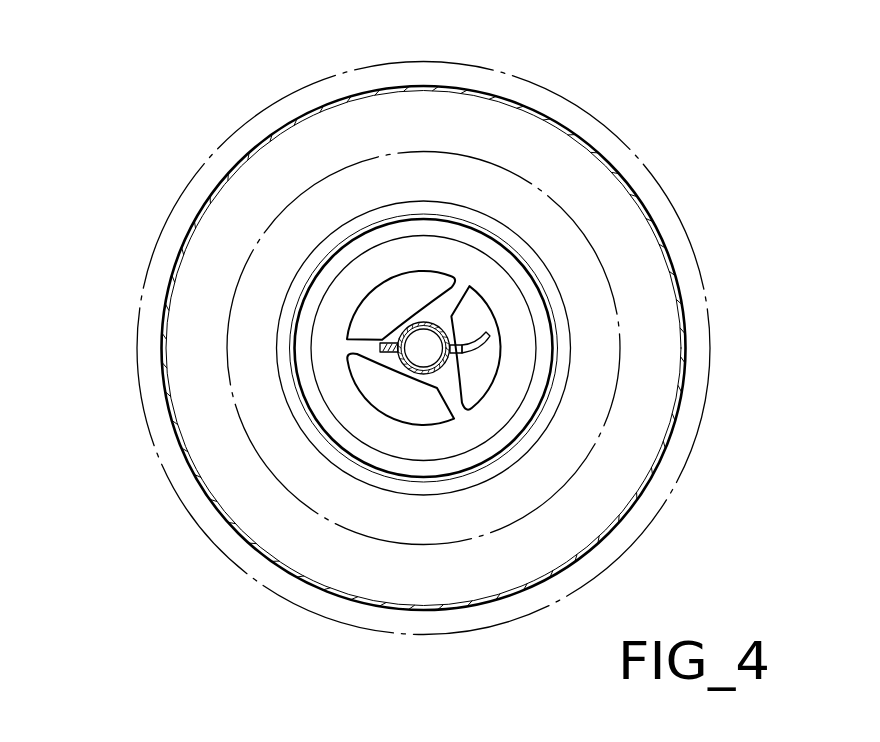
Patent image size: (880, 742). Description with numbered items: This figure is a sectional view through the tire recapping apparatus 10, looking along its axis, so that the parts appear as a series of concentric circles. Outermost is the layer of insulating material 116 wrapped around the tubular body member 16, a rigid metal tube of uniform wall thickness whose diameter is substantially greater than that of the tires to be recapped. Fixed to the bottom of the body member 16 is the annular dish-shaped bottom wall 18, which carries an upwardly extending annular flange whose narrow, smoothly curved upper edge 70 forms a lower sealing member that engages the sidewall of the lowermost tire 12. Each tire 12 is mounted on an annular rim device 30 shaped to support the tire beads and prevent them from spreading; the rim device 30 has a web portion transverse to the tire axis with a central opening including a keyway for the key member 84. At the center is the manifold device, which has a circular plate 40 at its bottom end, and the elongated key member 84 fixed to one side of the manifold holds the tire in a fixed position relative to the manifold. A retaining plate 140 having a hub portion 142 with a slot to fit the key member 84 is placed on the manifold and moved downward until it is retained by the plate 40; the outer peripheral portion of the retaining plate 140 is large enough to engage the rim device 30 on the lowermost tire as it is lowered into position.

The apparatus 10 is at (697, 167).
The tire 12 is at (516, 176).
The tubular body member 16 is at (688, 316).
The bottom wall 18 is at (365, 574).
The rim device 30 is at (377, 286).
The circular plate 40 is at (480, 308).
The upper edge 70 is at (571, 359).
The key member 84 is at (391, 353).
The insulating material 116 is at (150, 437).
The retaining plate 140 is at (355, 267).
The hub portion 142 is at (388, 332).